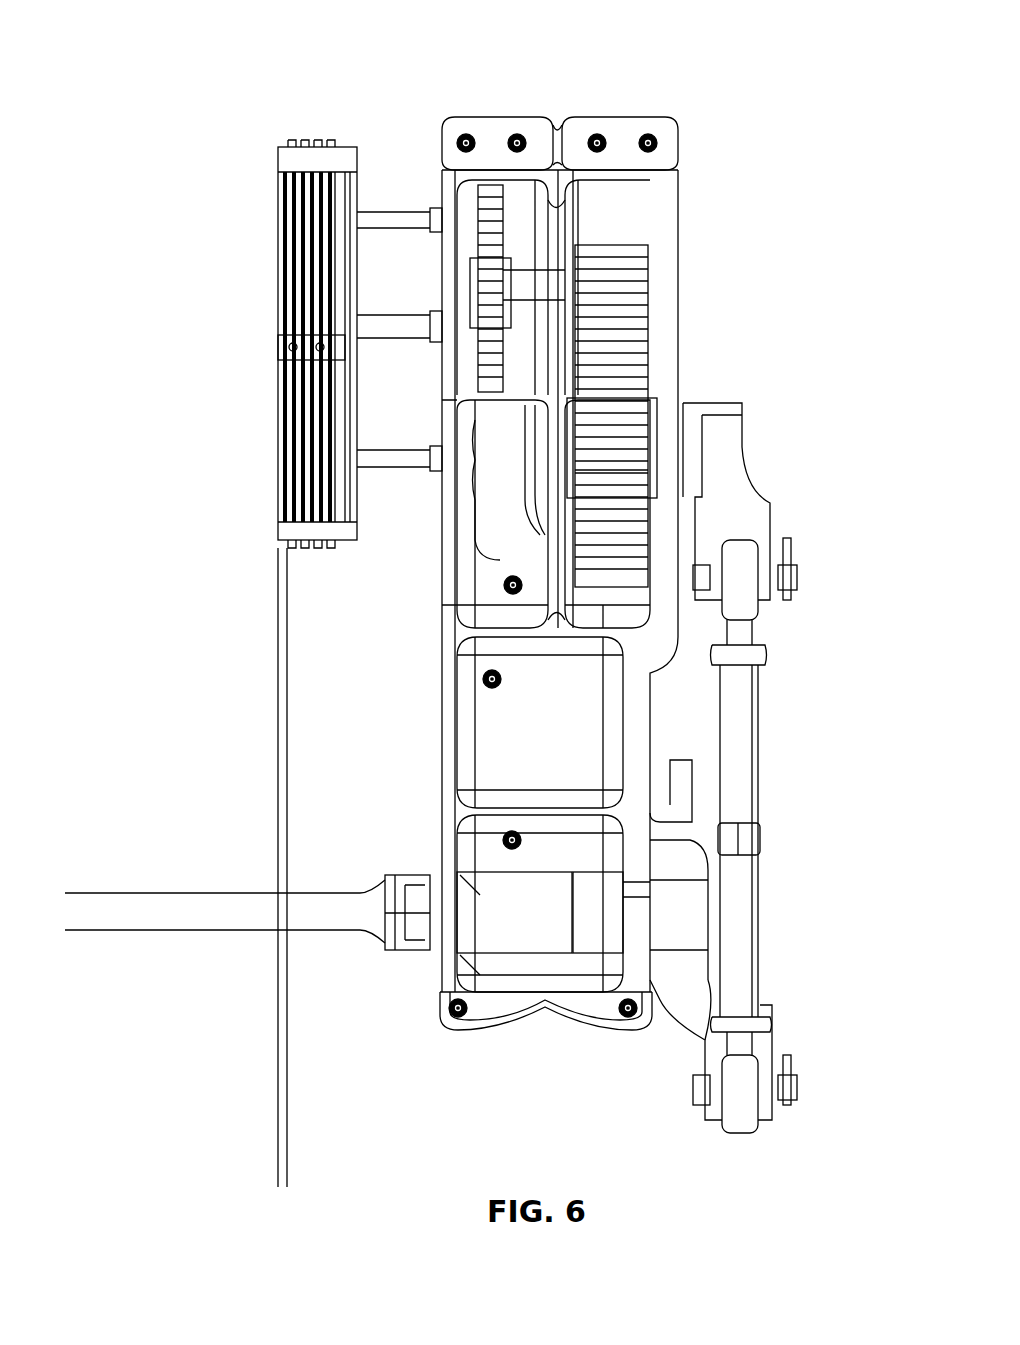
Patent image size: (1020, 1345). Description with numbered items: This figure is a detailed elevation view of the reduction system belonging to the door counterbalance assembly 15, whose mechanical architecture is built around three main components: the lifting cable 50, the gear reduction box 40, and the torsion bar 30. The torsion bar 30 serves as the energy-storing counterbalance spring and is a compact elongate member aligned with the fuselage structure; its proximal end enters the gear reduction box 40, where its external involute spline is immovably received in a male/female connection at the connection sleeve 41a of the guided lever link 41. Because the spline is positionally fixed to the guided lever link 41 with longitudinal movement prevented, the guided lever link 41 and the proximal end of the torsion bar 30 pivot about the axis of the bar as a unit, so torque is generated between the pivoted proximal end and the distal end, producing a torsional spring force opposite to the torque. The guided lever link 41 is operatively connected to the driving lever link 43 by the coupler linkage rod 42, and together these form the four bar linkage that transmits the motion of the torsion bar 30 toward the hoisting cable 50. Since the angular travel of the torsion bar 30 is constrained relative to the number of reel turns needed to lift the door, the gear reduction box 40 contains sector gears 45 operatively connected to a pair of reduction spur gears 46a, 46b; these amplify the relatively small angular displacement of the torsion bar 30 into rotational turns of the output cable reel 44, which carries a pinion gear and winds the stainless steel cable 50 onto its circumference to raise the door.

The counterbalance assembly 15 is at (95, 508).
The torsion bar spring 30 is at (215, 890).
The gear reduction box 40 is at (678, 120).
The guided lever link 41 is at (770, 1020).
The connection sleeve 41a is at (408, 950).
The coupler linkage rod 42 is at (745, 745).
The driving lever link 43 is at (750, 470).
The output cable reel 44 is at (278, 210).
The sector gears 45 is at (620, 375).
The reduction spur gear 46a is at (490, 185).
The reduction spur gear 46b is at (615, 240).
The lifting cable 50 is at (278, 690).